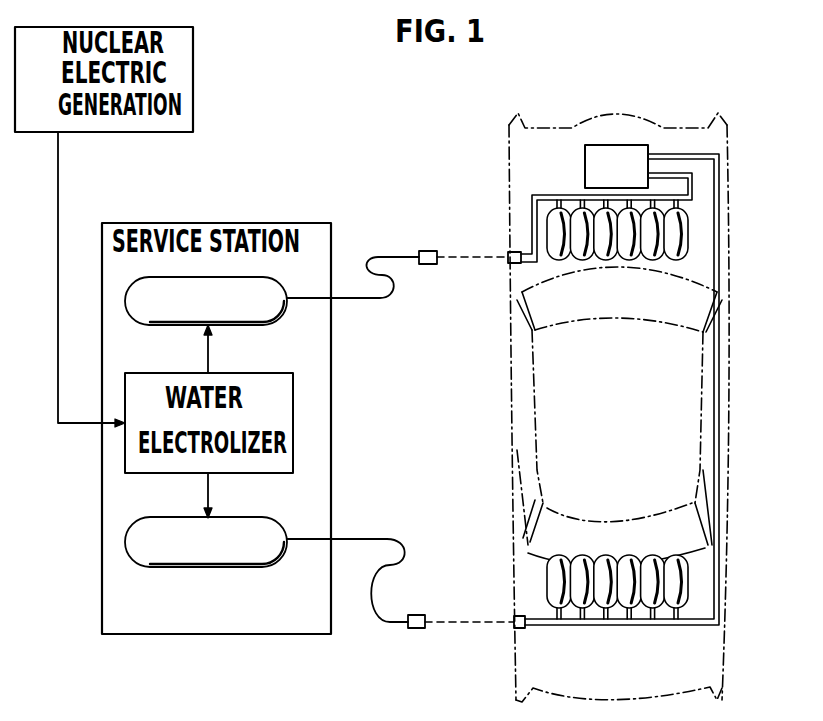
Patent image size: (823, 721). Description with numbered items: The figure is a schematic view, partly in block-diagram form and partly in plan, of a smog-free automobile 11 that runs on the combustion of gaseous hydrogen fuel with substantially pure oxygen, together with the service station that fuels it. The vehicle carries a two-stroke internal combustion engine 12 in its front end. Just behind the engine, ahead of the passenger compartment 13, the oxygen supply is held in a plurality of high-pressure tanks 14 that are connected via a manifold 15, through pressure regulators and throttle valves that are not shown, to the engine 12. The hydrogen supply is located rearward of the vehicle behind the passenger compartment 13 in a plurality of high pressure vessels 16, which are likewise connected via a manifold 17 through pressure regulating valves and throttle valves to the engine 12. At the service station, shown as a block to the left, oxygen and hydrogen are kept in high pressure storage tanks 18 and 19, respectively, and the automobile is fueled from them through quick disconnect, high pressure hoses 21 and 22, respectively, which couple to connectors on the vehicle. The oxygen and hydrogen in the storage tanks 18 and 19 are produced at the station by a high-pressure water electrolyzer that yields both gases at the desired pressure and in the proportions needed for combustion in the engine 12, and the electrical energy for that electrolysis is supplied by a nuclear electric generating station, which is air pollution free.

The smog-free automobile 11 is at (745, 418).
The two-stroke internal combustion engine 12 is at (623, 152).
The passenger compartment 13 is at (632, 417).
The high-pressure tanks 14 is at (694, 231).
The manifold 15 is at (690, 196).
The high pressure vessels 16 is at (696, 592).
The manifold 17 is at (718, 567).
The oxygen storage tank 18 is at (282, 312).
The hydrogen storage tank 19 is at (274, 517).
The quick disconnect high pressure hose 21 is at (380, 299).
The quick disconnect high pressure hose 22 is at (380, 538).